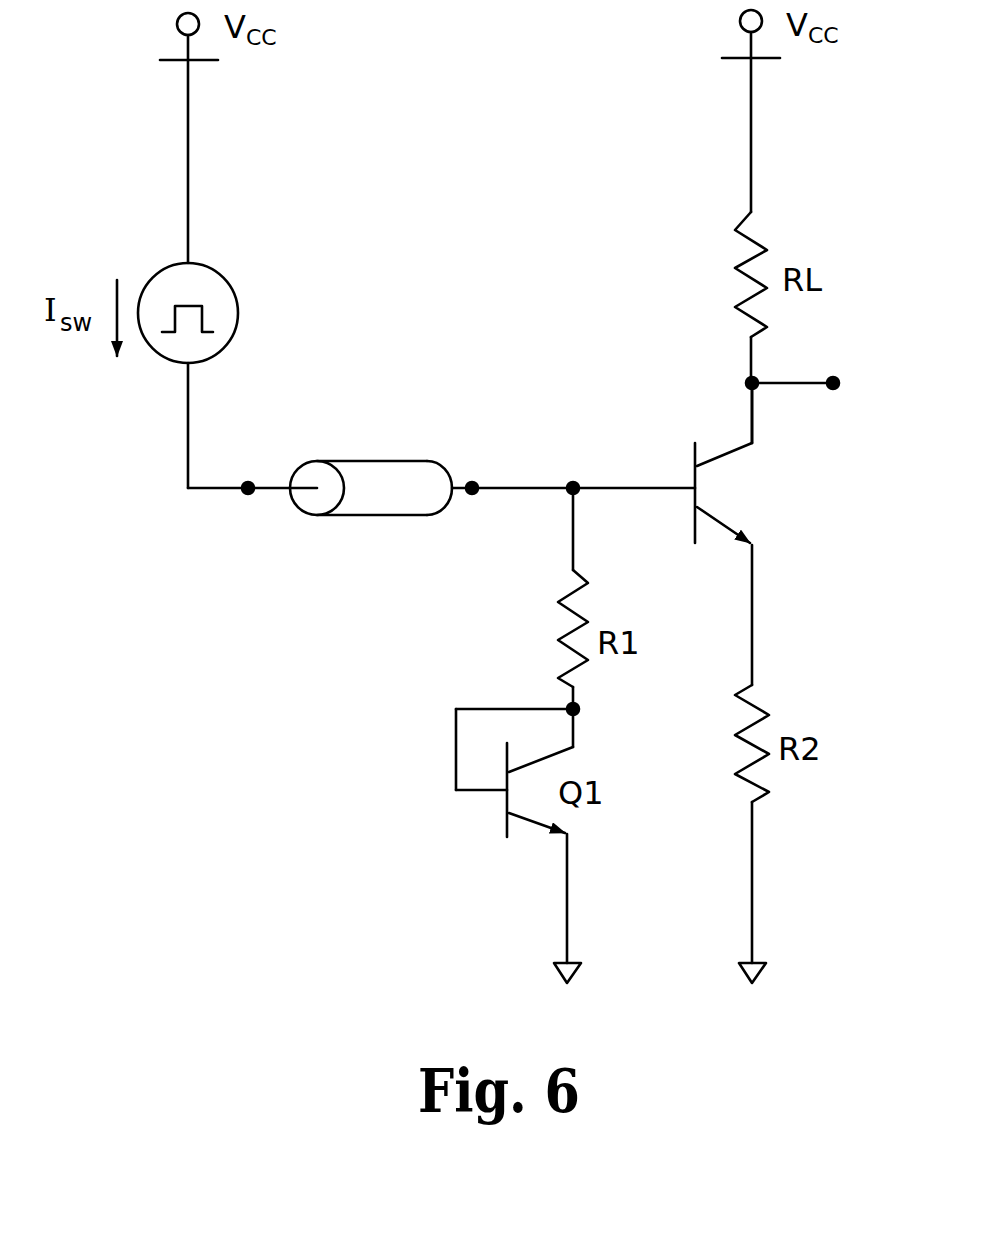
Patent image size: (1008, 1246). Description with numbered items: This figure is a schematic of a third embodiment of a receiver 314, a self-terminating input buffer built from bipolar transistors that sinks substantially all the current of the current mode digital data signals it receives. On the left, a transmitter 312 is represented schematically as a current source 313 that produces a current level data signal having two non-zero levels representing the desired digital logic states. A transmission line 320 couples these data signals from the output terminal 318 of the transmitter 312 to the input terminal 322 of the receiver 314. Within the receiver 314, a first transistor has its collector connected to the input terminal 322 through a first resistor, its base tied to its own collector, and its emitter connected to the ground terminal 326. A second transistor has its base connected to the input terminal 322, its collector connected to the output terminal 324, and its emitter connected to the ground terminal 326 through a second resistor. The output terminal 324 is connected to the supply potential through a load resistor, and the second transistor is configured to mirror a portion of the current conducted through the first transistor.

The transmitter 312 is at (252, 282).
The current source 313 is at (238, 324).
The receiver 314 is at (616, 416).
The output terminal 318 is at (250, 480).
The transmission line 320 is at (370, 502).
The input terminal 322 is at (473, 478).
The output terminal 324 is at (835, 392).
The ground terminal 326 is at (556, 970).